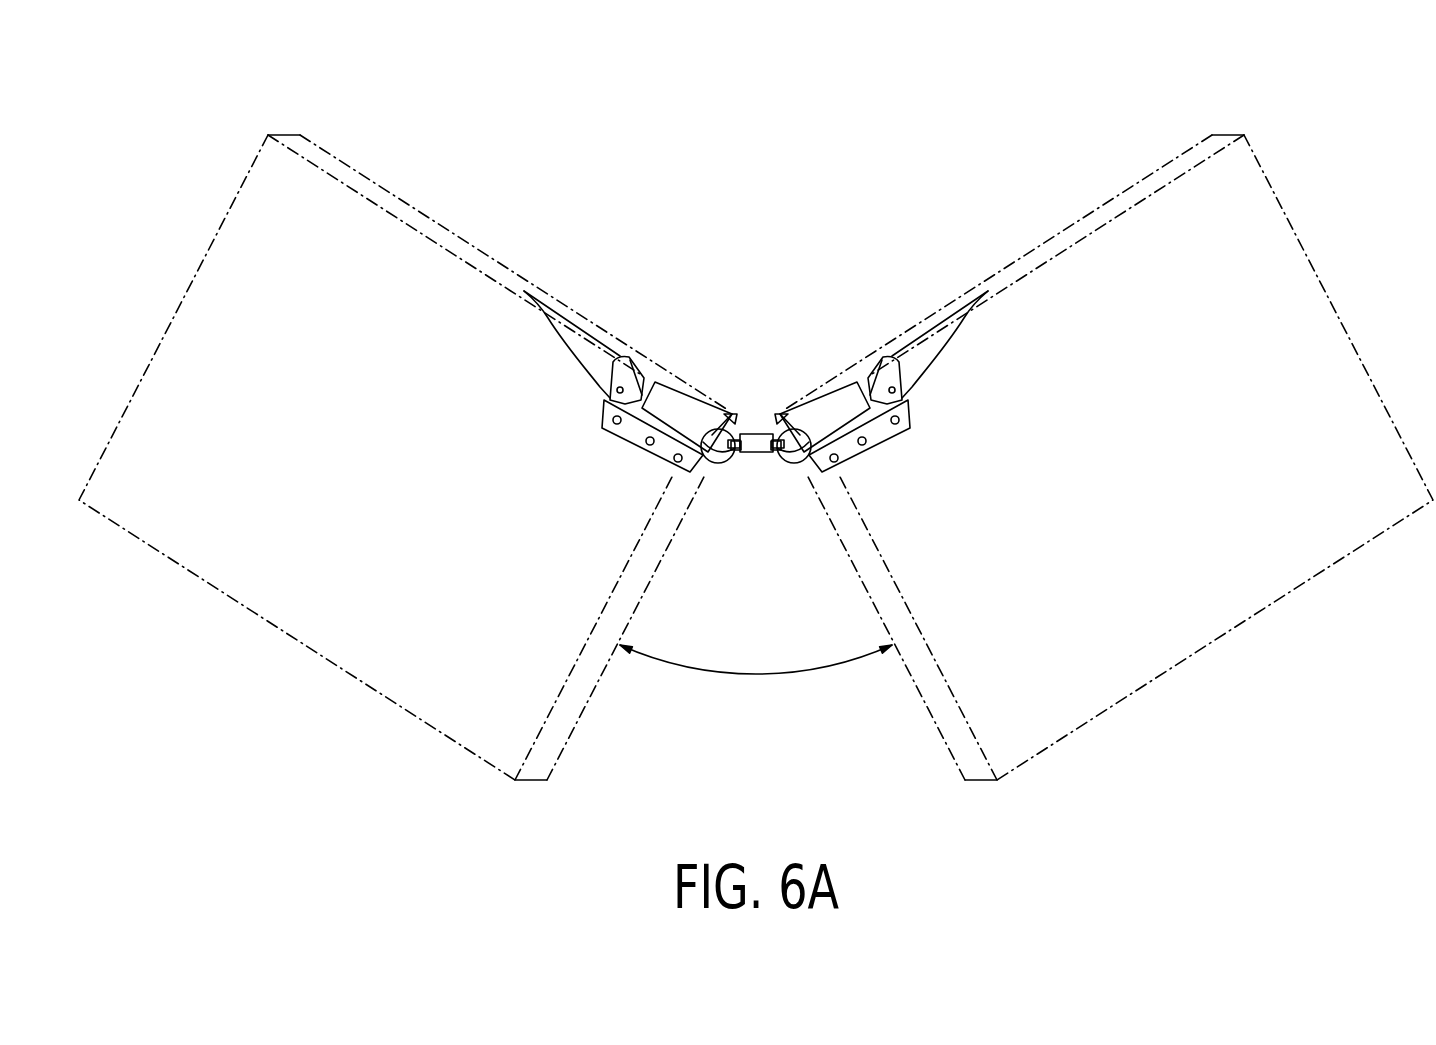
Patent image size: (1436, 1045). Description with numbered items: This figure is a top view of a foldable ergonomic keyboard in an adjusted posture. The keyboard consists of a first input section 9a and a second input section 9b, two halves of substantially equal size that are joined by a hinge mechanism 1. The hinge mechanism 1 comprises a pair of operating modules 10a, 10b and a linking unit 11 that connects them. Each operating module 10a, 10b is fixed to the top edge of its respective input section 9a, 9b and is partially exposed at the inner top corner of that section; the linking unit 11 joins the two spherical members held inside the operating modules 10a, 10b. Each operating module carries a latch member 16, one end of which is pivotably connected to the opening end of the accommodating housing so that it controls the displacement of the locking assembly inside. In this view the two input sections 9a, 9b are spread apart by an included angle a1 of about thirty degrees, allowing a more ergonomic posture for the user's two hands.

The hinge mechanism 1 is at (697, 246).
The first input section 9a is at (357, 160).
The second input section 9b is at (1155, 160).
The operating module 10a is at (680, 364).
The operating module 10b is at (832, 364).
The linking unit 11 is at (761, 416).
The latch member 16 is at (580, 325).
The included angle a1 is at (756, 658).